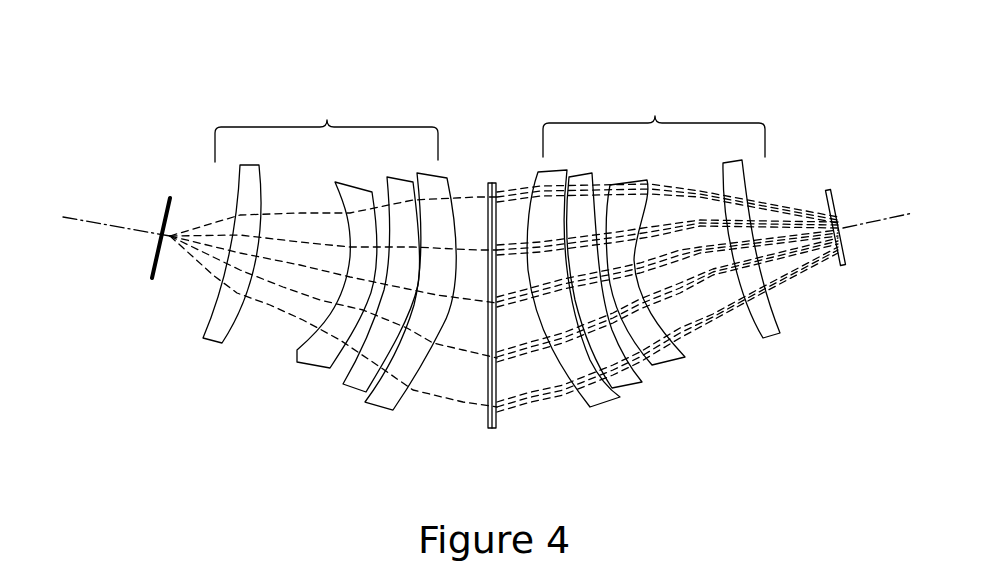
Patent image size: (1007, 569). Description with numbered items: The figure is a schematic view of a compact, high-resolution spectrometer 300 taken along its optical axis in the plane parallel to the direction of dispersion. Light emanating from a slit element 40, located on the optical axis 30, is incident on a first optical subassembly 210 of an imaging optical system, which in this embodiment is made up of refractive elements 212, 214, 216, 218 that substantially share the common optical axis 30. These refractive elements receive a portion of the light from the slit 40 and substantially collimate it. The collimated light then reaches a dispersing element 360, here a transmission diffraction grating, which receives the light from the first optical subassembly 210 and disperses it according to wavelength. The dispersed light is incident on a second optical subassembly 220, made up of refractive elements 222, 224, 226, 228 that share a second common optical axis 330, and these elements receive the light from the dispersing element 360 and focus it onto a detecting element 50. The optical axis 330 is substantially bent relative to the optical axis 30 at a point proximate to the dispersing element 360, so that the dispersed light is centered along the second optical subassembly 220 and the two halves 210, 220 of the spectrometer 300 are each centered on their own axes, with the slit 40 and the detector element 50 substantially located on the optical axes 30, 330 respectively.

The spectrometer 300 is at (125, 92).
The optical axis 30 is at (93, 227).
The optical axis 330 is at (885, 222).
The slit element 40 is at (158, 212).
The detecting element 50 is at (837, 210).
The dispersing element 360 is at (492, 184).
The first optical subassembly 210 is at (327, 120).
The second optical subassembly 220 is at (655, 116).
The refractive element 212 is at (205, 350).
The refractive element 214 is at (313, 367).
The refractive element 216 is at (353, 393).
The refractive element 218 is at (380, 410).
The refractive element 222 is at (603, 407).
The refractive element 224 is at (637, 387).
The refractive element 226 is at (670, 365).
The refractive element 228 is at (772, 340).